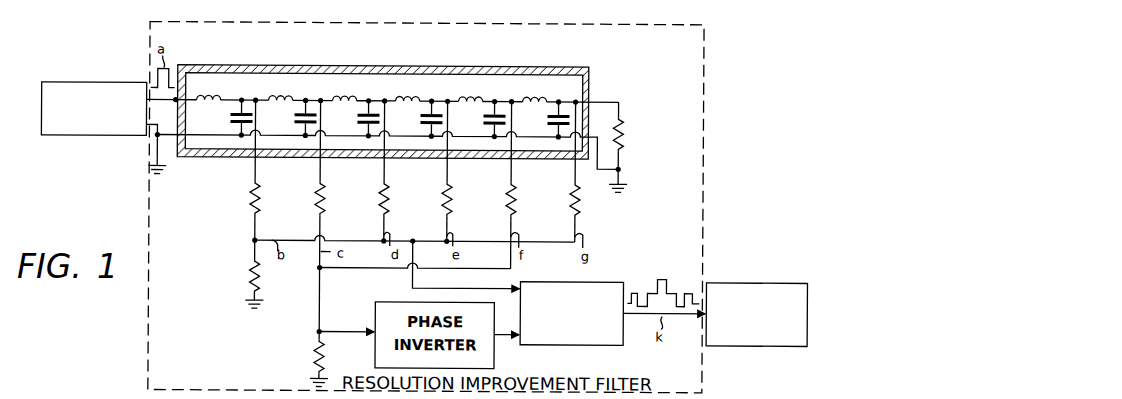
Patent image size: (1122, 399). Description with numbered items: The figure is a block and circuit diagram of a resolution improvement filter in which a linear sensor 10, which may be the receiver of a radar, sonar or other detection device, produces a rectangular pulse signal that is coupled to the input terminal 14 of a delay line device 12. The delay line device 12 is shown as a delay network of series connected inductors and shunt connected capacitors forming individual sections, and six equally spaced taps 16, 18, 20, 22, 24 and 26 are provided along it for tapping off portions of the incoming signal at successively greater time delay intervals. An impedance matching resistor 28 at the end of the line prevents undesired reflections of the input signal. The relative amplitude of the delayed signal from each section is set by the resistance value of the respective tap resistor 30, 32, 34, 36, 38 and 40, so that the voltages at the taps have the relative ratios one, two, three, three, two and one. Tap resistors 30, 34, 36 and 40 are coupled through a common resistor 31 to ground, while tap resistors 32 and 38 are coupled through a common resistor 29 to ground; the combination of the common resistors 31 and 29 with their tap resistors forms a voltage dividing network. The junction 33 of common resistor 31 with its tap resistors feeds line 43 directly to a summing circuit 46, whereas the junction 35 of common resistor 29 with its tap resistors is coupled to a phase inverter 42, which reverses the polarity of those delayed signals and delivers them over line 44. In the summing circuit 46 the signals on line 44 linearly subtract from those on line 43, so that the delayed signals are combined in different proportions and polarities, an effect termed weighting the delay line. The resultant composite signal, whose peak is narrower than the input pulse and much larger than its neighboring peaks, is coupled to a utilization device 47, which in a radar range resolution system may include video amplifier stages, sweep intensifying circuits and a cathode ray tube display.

The linear sensor 10 is at (54, 84).
The delay line device 12 is at (208, 66).
The input terminal 14 is at (173, 102).
The tap 16 is at (229, 111).
The tap 18 is at (320, 103).
The tap 20 is at (384, 103).
The tap 22 is at (447, 100).
The tap 24 is at (511, 100).
The tap 26 is at (575, 100).
The impedance matching resistor 28 is at (623, 123).
The common resistor 29 is at (313, 351).
The tap resistor 30 is at (253, 211).
The common resistor 31 is at (250, 277).
The tap resistor 32 is at (317, 212).
The junction 33 is at (253, 243).
The tap resistor 34 is at (381, 212).
The junction 35 is at (317, 333).
The tap resistor 36 is at (445, 212).
The tap resistor 38 is at (509, 212).
The tap resistor 40 is at (573, 212).
The phase inverter 42 is at (375, 341).
The line 43 is at (411, 283).
The line 44 is at (504, 336).
The summing circuit 46 is at (600, 281).
The utilization device 47 is at (758, 281).